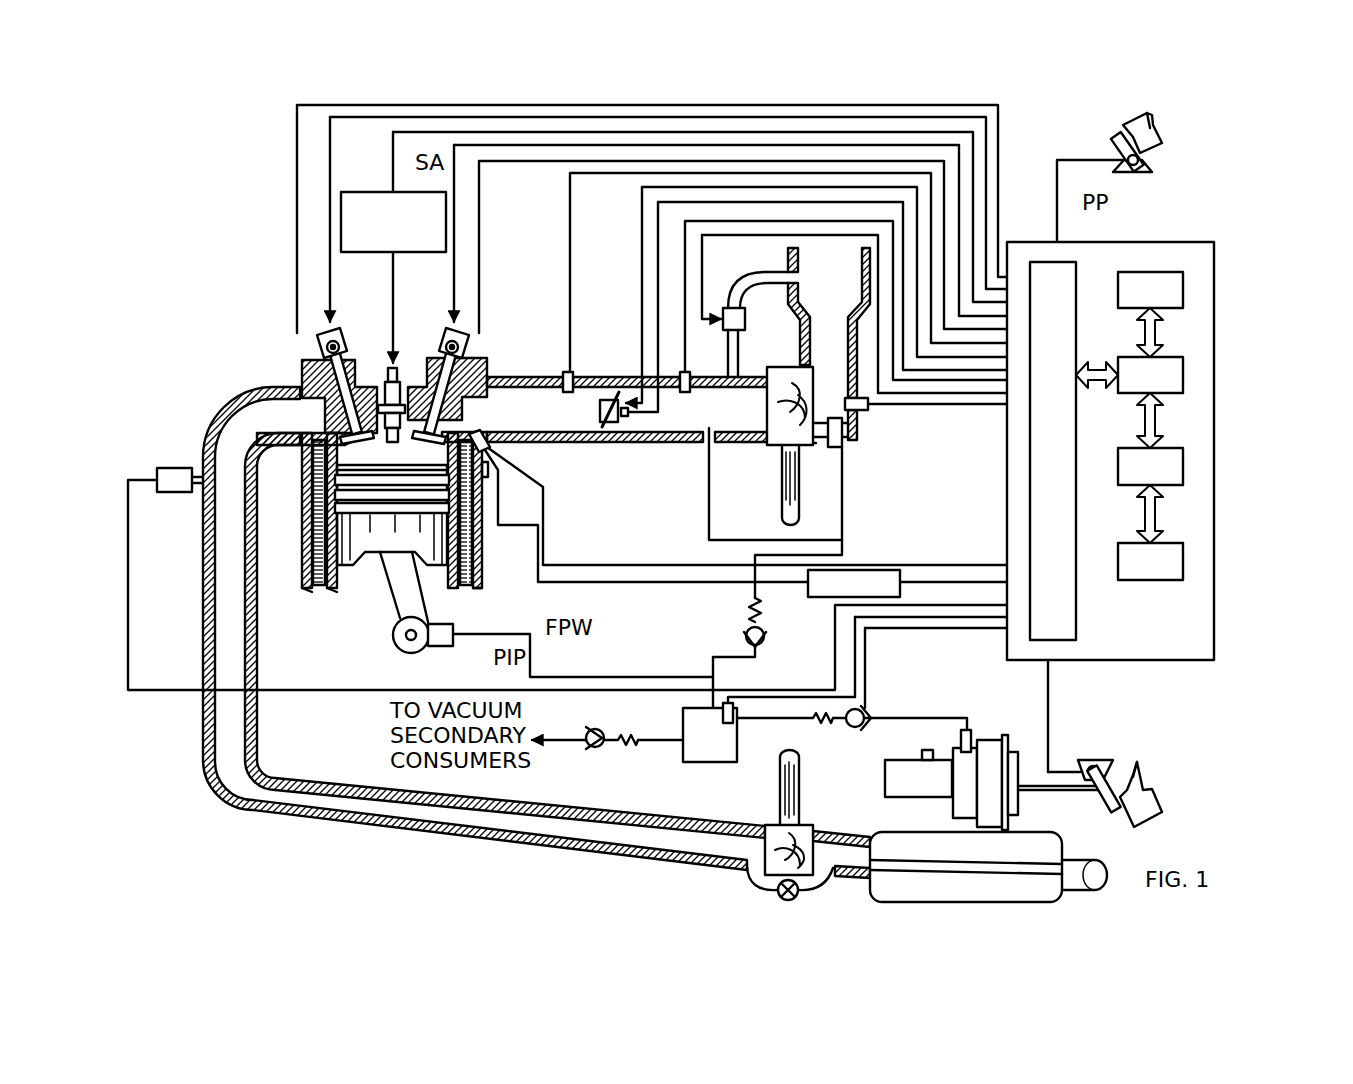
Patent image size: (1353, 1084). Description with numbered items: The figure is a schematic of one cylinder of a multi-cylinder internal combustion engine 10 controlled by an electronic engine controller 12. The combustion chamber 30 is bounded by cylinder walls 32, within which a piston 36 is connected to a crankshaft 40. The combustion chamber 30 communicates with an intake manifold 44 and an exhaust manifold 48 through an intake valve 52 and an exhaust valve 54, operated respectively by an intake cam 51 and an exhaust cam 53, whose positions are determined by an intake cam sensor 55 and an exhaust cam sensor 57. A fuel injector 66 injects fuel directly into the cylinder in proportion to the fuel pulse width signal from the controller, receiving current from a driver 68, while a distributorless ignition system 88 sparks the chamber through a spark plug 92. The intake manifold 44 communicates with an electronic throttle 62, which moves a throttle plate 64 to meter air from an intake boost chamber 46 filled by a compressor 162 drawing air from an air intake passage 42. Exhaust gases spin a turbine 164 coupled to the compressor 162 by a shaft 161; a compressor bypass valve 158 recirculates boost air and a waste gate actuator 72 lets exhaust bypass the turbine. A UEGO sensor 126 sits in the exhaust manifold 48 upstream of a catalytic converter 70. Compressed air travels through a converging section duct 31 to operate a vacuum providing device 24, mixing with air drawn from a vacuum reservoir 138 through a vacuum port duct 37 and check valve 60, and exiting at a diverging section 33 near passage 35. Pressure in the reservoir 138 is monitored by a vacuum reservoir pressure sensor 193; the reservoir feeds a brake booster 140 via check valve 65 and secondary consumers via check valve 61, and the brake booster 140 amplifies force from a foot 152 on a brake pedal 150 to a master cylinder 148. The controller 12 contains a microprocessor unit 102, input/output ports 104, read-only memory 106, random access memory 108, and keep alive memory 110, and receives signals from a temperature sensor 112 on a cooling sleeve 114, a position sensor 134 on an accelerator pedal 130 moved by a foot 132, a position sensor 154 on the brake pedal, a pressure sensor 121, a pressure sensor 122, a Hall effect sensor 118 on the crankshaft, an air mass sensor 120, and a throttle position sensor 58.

The internal combustion engine 10 is at (242, 316).
The electronic engine controller 12 is at (1206, 241).
The vacuum providing device 24 is at (842, 447).
The combustion chamber 30 is at (388, 455).
The converging section duct 31 is at (728, 539).
The cylinder walls 32 is at (337, 575).
The diverging section 33 is at (820, 422).
The passage 35 is at (815, 445).
The piston 36 is at (378, 572).
The vacuum port duct 37 is at (843, 540).
The crankshaft 40 is at (402, 648).
The air intake passage 42 is at (842, 292).
The intake manifold 44 is at (545, 420).
The intake boost chamber 46 is at (715, 420).
The exhaust manifold 48 is at (289, 425).
The intake cam 51 is at (447, 330).
The intake valve 52 is at (428, 424).
The exhaust cam 53 is at (341, 330).
The exhaust valve 54 is at (327, 405).
The intake cam sensor 55 is at (462, 346).
The exhaust cam sensor 57 is at (318, 344).
The throttle position sensor 58 is at (630, 414).
The check valve 60 is at (765, 631).
The check valve 61 is at (602, 745).
The electronic throttle 62 is at (606, 396).
The throttle plate 64 is at (622, 390).
The check valve 65 is at (850, 727).
The fuel injector 66 is at (498, 466).
The driver 68 is at (900, 584).
The catalytic converter 70 is at (870, 884).
The waste gate actuator 72 is at (778, 893).
The distributorless ignition system 88 is at (351, 192).
The spark plug 92 is at (395, 362).
The microprocessor unit 102 is at (1185, 368).
The input/output ports 104 is at (1076, 270).
The read-only memory 106 is at (1185, 288).
The random access memory 108 is at (1185, 463).
The keep alive memory 110 is at (1185, 558).
The temperature sensor 112 is at (488, 478).
The cooling sleeve 114 is at (478, 558).
The Hall effect sensor 118 is at (437, 650).
The air mass sensor 120 is at (860, 411).
The pressure sensor 121 is at (566, 371).
The pressure sensor 122 is at (692, 377).
The UEGO sensor 126 is at (157, 476).
The accelerator pedal 130 is at (1113, 135).
The foot 132 is at (1162, 123).
The position sensor 134 is at (1145, 161).
The vacuum reservoir 138 is at (683, 712).
The brake booster 140 is at (978, 742).
The master cylinder 148 is at (885, 772).
The brake pedal 150 is at (1115, 812).
The foot 152 is at (1153, 788).
The position sensor 154 is at (1085, 772).
The compressor bypass valve 158 is at (767, 310).
The shaft 161 is at (782, 452).
The compressor 162 is at (788, 366).
The turbine 164 is at (765, 824).
The vacuum reservoir pressure sensor 193 is at (733, 707).